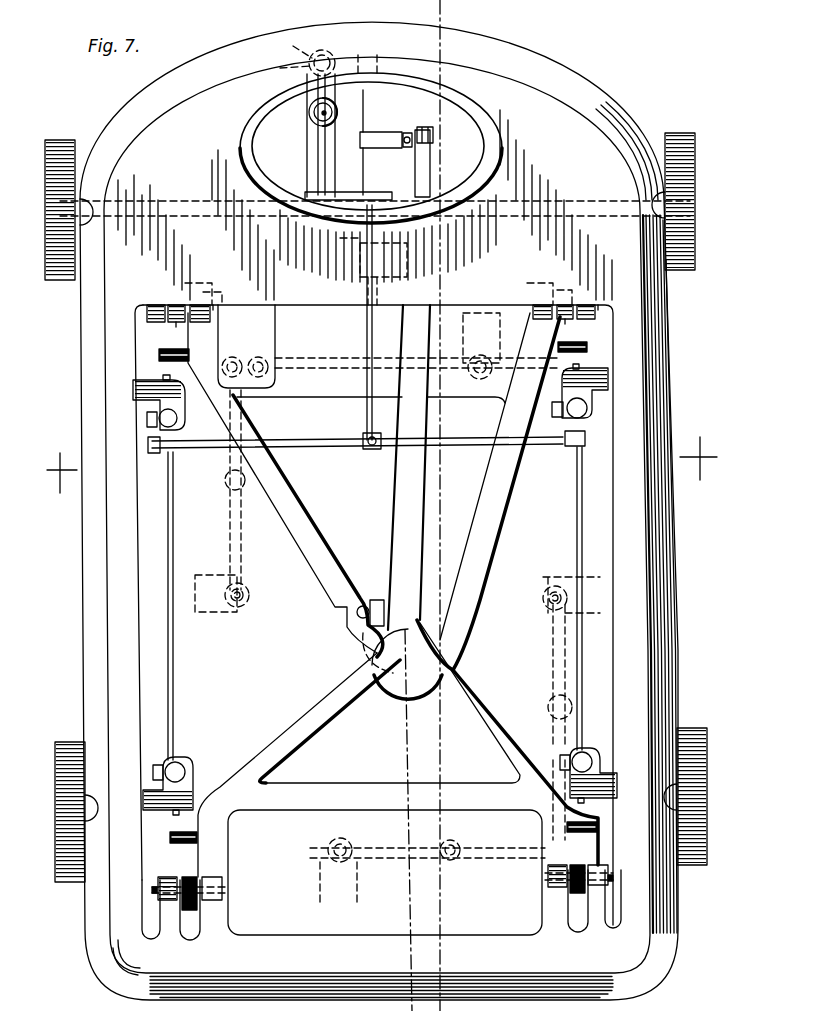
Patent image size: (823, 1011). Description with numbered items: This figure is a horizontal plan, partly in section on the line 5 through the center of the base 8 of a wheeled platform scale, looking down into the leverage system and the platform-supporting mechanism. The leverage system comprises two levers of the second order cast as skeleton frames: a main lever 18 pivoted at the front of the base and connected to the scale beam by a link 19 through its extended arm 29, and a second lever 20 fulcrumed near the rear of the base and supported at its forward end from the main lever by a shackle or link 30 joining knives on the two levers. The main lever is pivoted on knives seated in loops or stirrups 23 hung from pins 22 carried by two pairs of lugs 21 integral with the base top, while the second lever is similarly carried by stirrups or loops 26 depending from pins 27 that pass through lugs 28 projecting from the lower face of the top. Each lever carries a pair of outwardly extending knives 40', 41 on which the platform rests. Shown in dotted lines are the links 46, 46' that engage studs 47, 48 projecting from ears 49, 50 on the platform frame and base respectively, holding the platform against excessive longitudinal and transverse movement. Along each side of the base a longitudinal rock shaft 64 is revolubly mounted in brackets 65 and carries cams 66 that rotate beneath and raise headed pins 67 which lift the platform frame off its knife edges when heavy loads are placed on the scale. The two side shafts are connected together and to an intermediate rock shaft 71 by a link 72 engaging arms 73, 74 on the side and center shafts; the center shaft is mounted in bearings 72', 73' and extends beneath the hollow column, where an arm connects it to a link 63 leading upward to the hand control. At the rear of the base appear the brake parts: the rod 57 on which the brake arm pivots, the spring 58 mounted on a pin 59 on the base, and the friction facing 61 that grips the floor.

The section line 5— 5 is at (425, 7).
The base 8 is at (672, 588).
The main lever 18 is at (300, 720).
The link 19 is at (433, 132).
The second lever 20 is at (480, 600).
The lugs 21 is at (205, 876).
The pins 22 is at (158, 888).
The loops or stirrups 23 is at (190, 911).
The stirrups or loops 26 is at (178, 324).
The pins 27 is at (215, 318).
The lugs 28 is at (200, 305).
The extended arm 29 is at (430, 160).
The shackle or link 30 is at (360, 640).
The knives 40' is at (375, 349).
The knives 41 is at (170, 838).
The link 46 is at (398, 615).
The link 46' is at (417, 636).
The stud 47 is at (285, 350).
The stud 48 is at (492, 362).
The ear 49 is at (235, 357).
The ear 50 is at (308, 152).
The rod 57 is at (195, 210).
The spring 58 is at (335, 58).
The pin 59 is at (287, 72).
The friction facing 61 is at (292, 46).
The link 63 is at (309, 113).
The longitudinal shafts 64 is at (228, 592).
The brackets 65 is at (133, 388).
The cams 66 is at (147, 420).
The headed pins 67 is at (178, 416).
The intermediate rock shaft 71 is at (367, 333).
The link 72 is at (357, 458).
The bearing 72' is at (358, 271).
The arms 73 is at (362, 595).
The bearing 73' is at (393, 48).
The arm 74 is at (388, 130).